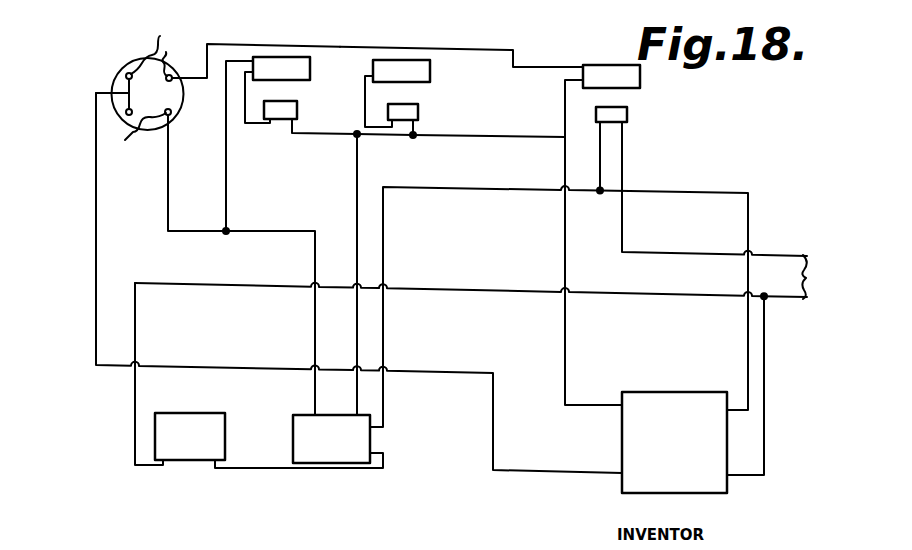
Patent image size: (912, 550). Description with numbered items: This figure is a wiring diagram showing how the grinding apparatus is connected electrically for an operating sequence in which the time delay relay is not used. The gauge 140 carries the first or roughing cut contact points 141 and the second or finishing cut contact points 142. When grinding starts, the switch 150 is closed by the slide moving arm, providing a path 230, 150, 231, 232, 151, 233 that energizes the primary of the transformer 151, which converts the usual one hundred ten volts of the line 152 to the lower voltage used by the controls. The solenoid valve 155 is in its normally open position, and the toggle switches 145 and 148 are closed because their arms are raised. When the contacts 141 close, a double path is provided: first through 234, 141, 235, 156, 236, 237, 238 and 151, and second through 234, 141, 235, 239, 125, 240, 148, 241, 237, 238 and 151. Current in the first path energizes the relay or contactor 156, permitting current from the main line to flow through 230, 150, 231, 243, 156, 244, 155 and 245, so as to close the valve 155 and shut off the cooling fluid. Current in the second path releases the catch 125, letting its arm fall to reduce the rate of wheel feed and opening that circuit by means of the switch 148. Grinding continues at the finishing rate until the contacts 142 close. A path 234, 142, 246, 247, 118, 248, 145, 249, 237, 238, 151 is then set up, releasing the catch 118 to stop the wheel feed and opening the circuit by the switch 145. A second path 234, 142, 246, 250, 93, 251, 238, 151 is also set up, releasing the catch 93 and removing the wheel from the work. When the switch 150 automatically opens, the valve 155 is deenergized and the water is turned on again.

The gauge 140 is at (116, 68).
The second or finishing cut contact points 142 is at (162, 44).
The first or roughing cut contact points 141 is at (135, 139).
The conductor 246 is at (342, 46).
The conductor 250 is at (436, 47).
The conductor 247 is at (311, 72).
The catch 125 is at (297, 81).
The toggle switch 148 is at (297, 111).
The conductor 240 is at (248, 125).
The conductor 239 is at (224, 183).
The conductor 241 is at (321, 137).
The conductor 235 is at (168, 190).
The conductor 234 is at (96, 240).
The conductor 245 is at (135, 325).
The conductor 236 is at (357, 352).
The conductor 243 is at (450, 187).
The conductor 237 is at (463, 137).
The catch 118 is at (431, 71).
The conductor 248 is at (367, 97).
The toggle switch 145 is at (419, 111).
The conductor 249 is at (413, 129).
The conductor 251 is at (565, 110).
The catch 93 is at (640, 76).
The switch 150 is at (627, 113).
The conductor 231 is at (600, 155).
The conductor 230 is at (625, 158).
The conductor 232 is at (695, 192).
The line 152 is at (789, 277).
The conductor 238 is at (592, 405).
The conductor 233 is at (764, 419).
The transformer 151 is at (687, 482).
The solenoid valve 155 is at (190, 436).
The relay or contactor 156 is at (358, 428).
The conductor 244 is at (280, 468).